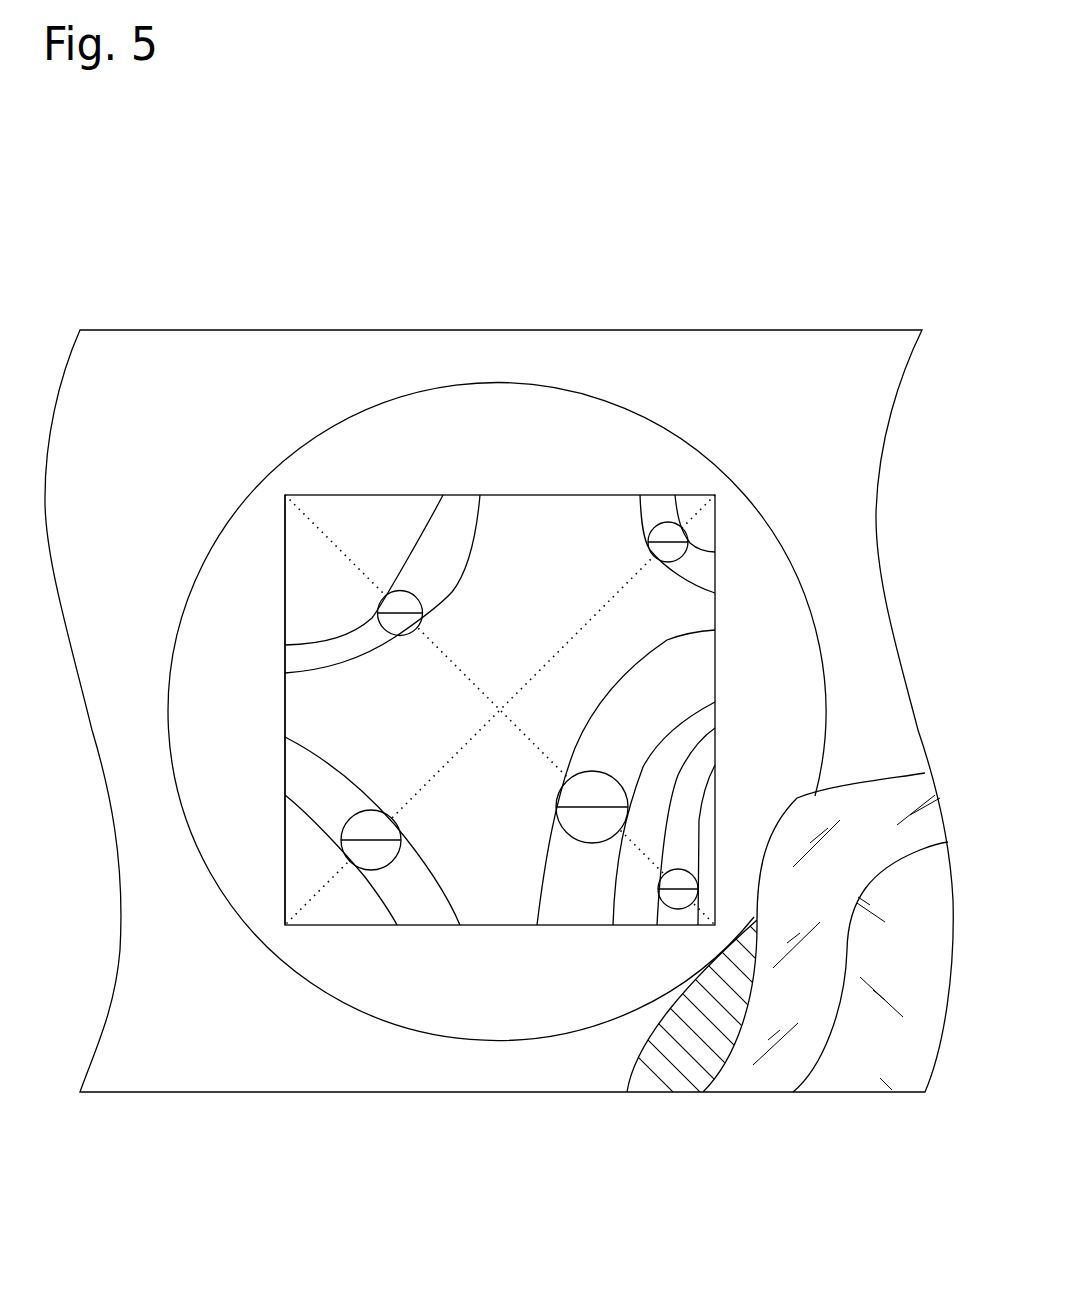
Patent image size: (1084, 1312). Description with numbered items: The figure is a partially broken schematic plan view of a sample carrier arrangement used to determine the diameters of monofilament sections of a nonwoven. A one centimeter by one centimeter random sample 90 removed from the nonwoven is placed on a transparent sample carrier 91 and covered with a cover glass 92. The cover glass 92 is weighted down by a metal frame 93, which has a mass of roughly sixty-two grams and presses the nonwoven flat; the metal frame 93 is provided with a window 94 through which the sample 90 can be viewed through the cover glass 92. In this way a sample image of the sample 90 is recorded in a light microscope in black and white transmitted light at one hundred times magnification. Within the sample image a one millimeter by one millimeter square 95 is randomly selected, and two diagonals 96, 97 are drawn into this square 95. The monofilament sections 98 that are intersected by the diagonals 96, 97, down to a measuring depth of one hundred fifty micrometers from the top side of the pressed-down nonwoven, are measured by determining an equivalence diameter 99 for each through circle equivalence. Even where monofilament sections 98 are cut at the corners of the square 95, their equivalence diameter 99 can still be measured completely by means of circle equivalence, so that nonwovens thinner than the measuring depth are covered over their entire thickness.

The random sample 90 is at (403, 483).
The transparent sample carrier 91 is at (900, 1005).
The cover glass 92 is at (353, 972).
The metal frame 93 is at (517, 1065).
The window 94 is at (288, 458).
The square 95 is at (285, 720).
The diagonal 96 is at (593, 618).
The diagonal 97 is at (445, 655).
The monofilament sections 98 is at (442, 552).
The equivalence diameter 99 is at (669, 541).